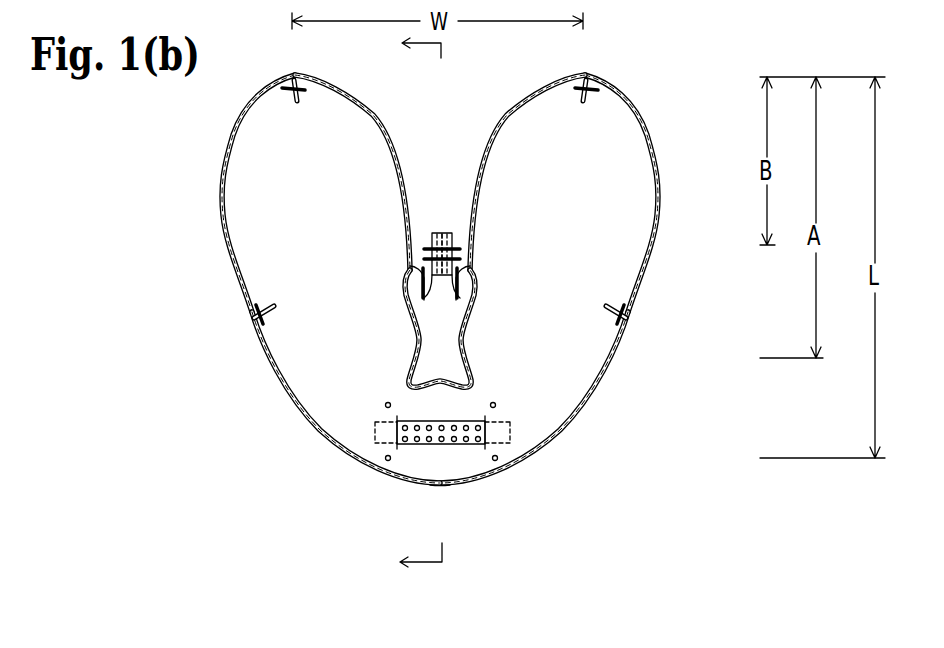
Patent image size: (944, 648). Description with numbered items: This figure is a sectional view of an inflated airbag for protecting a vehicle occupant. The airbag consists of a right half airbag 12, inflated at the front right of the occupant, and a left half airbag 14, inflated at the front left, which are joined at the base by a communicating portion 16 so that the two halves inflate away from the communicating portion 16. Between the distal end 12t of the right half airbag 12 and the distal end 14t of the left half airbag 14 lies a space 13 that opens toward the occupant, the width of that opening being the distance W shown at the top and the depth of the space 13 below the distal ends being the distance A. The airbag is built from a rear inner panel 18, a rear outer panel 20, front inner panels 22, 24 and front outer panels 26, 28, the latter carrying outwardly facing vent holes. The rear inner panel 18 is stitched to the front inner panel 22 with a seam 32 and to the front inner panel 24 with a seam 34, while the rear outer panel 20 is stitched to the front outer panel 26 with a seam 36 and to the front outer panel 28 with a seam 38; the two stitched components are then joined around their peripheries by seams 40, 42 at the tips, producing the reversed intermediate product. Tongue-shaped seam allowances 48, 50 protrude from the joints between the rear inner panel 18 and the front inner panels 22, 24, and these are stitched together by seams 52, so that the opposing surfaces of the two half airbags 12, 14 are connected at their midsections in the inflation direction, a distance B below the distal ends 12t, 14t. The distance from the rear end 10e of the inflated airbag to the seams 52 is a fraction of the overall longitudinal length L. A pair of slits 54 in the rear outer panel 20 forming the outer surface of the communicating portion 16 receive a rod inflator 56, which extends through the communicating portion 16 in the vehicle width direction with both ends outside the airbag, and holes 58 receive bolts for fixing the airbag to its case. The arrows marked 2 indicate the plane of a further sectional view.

The section line of FIG. 2 is at (408, 318).
The rear end 10e is at (439, 501).
The right half airbag 12 is at (281, 168).
The distal end 12t is at (280, 67).
The space 13 is at (492, 113).
The left half airbag 14 is at (589, 168).
The distal end 14t is at (589, 61).
The communicating portion 16 is at (440, 426).
The rear inner panel 18 is at (469, 270).
The rear outer panel 20 is at (325, 445).
The front inner panel 22 is at (373, 120).
The front inner panel 24 is at (497, 136).
The front outer panel 26 is at (222, 200).
The front outer panel 28 is at (662, 190).
The seam 32 is at (413, 300).
The seam 34 is at (465, 294).
The seam 36 is at (255, 304).
The seam 38 is at (623, 305).
The seam 40 is at (283, 95).
The seam 42 is at (596, 95).
The tongue-shaped seam allowance 48 is at (431, 232).
The tongue-shaped seam allowance 50 is at (455, 233).
The seams 52 is at (460, 257).
The slits 54 is at (510, 430).
The rod inflator 56 is at (461, 455).
The holes 58 is at (497, 460).